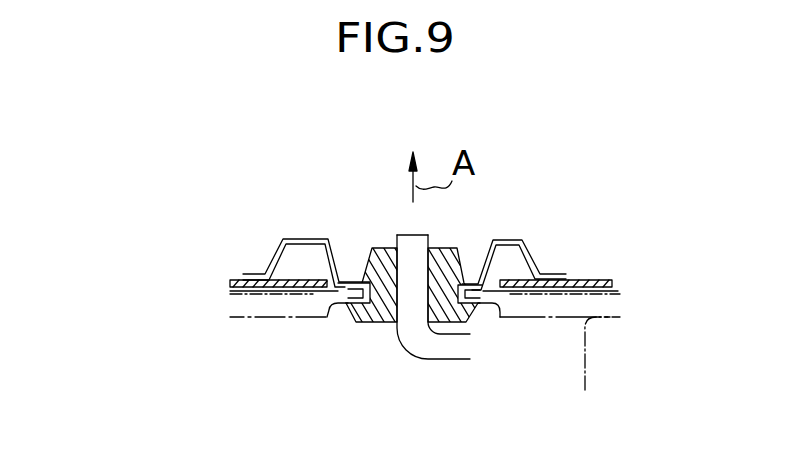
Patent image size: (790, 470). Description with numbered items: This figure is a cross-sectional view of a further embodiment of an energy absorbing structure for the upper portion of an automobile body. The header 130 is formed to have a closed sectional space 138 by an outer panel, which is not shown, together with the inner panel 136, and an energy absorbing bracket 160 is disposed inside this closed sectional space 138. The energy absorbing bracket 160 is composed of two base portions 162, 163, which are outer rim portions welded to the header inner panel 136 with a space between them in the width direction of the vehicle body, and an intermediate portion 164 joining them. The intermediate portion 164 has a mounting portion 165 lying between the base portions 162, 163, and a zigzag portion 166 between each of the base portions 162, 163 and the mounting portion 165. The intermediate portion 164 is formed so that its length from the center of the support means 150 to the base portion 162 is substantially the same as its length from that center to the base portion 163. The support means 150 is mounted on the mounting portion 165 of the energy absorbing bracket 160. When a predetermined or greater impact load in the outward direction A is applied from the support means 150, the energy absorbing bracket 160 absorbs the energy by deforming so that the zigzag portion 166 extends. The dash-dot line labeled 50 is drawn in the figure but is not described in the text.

The circuit board 50 is at (581, 377).
The header 130 is at (606, 292).
The inner panel 136 is at (277, 295).
The closed sectional space 138 is at (547, 247).
The support means 150 is at (398, 326).
The energy absorbing bracket 160 is at (318, 240).
The base portion 162 is at (218, 292).
The base portion 163 is at (542, 296).
The intermediate portion 164 is at (480, 305).
The mounting portion 165 is at (345, 310).
The zigzag portion 166 is at (512, 240).